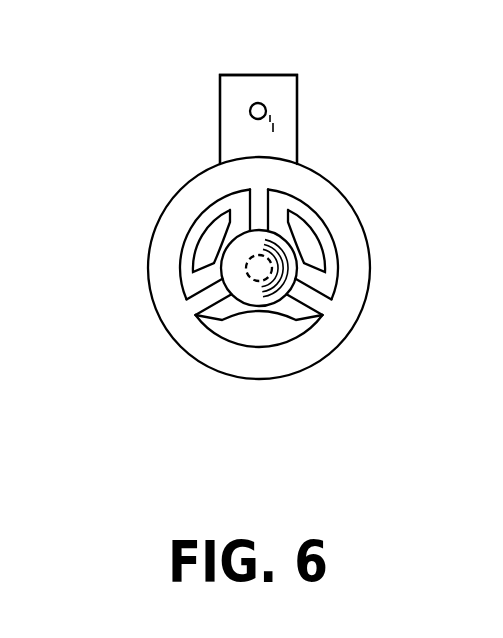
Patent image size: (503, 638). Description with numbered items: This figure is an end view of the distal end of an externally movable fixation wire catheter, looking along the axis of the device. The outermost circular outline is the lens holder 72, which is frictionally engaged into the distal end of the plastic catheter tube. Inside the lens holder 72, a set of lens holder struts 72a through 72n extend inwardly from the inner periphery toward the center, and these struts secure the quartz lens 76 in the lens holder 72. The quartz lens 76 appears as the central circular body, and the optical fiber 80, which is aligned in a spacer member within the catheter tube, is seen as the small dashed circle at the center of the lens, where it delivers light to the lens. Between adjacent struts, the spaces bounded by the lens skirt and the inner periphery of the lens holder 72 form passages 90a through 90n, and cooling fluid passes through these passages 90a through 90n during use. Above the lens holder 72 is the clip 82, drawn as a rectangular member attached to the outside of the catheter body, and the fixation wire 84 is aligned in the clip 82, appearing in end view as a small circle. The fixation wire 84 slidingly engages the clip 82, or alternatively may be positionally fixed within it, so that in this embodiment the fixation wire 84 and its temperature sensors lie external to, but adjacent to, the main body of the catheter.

The lens holder 72 is at (343, 220).
The lens holder strut 72a is at (258, 200).
The lens holder strut 72n is at (203, 296).
The quartz lens 76 is at (237, 250).
The optical fiber 80 is at (243, 267).
The clip 82 is at (258, 76).
The fixation wire 84 is at (261, 112).
The passage 90a is at (320, 248).
The passage 90n is at (265, 330).